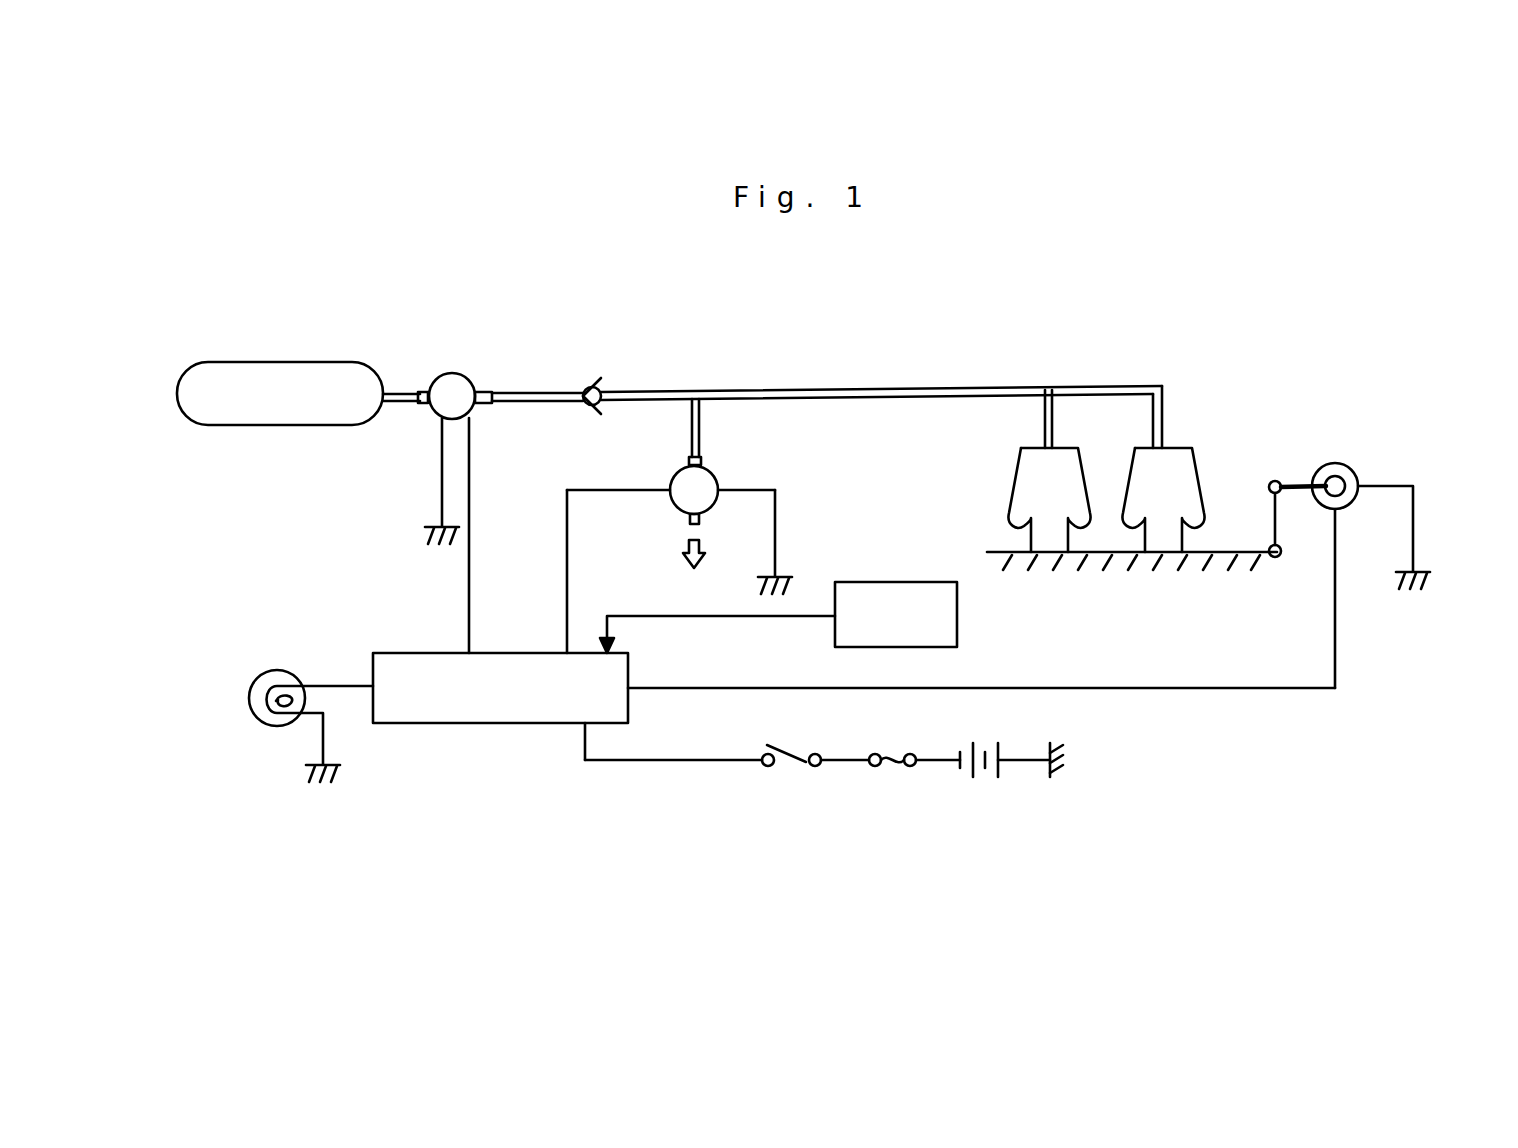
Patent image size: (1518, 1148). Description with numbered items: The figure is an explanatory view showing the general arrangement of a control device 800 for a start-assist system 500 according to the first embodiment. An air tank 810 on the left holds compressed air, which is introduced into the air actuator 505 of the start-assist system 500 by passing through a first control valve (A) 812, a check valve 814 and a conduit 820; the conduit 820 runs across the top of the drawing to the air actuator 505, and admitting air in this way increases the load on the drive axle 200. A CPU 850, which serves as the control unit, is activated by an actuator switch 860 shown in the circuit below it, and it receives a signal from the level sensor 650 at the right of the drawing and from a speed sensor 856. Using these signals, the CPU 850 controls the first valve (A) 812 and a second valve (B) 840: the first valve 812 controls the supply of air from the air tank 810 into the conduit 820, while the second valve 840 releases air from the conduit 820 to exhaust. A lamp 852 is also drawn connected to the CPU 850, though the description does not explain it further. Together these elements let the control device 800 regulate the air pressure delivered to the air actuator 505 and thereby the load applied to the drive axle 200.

The control device 800 is at (968, 337).
The air tank 810 is at (286, 362).
The first control valve (A) 812 is at (476, 383).
The check valve 814 is at (604, 390).
The conduit 820 is at (880, 388).
The second valve (B) 840 is at (676, 471).
The CPU 850 is at (423, 653).
The warning lamp 852 is at (278, 670).
The speed sensor 856 is at (957, 625).
The actuator switch 860 is at (790, 747).
The start-assist system 500 is at (1087, 467).
The air actuator 505 is at (1020, 456).
The drive axle 200 is at (1272, 616).
The level sensor 650 is at (1366, 471).